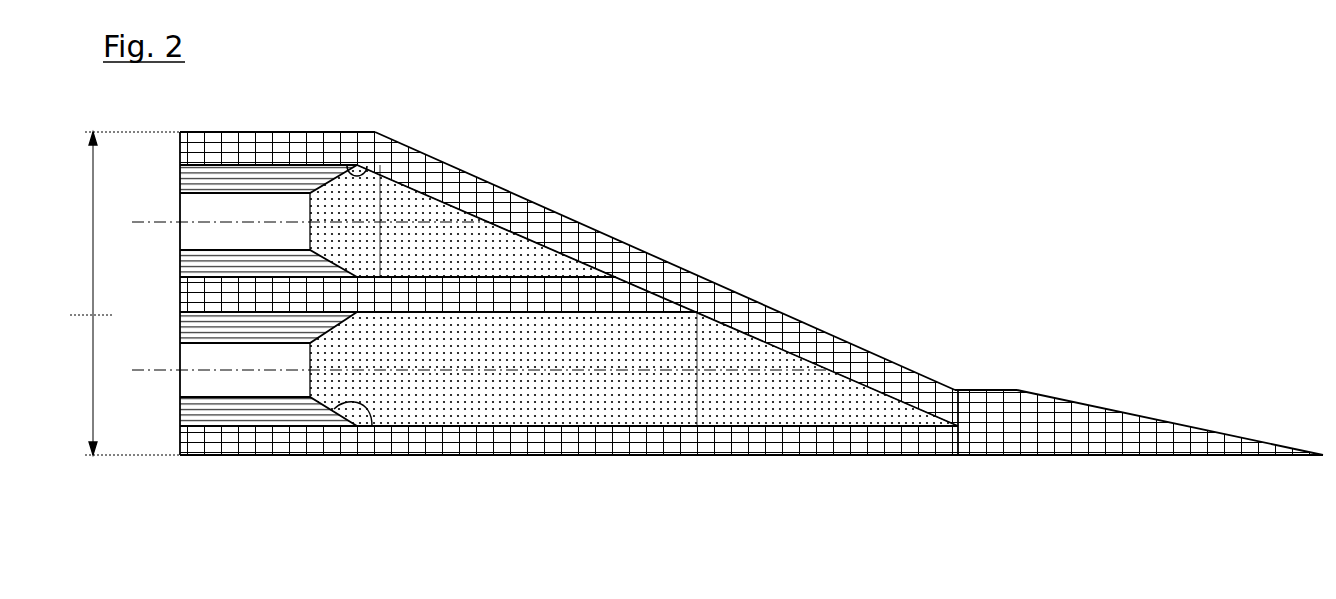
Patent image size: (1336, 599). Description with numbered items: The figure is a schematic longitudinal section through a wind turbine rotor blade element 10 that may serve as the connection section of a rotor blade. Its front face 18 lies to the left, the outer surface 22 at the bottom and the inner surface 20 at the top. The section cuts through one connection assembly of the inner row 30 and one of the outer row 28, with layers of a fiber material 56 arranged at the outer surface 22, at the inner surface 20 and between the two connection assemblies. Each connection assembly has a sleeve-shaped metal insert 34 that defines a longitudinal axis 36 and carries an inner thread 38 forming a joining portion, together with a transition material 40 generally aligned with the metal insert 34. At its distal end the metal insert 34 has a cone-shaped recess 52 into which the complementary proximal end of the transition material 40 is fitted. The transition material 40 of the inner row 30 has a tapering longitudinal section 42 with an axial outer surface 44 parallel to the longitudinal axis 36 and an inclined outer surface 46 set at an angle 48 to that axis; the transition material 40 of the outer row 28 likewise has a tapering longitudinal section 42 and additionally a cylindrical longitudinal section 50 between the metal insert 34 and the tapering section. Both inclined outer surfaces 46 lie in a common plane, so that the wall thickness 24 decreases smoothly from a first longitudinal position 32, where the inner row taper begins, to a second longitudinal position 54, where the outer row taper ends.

The wind turbine rotor blade element 10 is at (877, 120).
The front face 18 is at (178, 436).
The inner surface 20 is at (422, 150).
The outer surface 22 is at (455, 456).
The wall thickness 24 is at (125, 293).
The outer row 28 is at (156, 330).
The inner row 30 is at (156, 185).
The first longitudinal position 32 is at (375, 131).
The metal insert 34 is at (245, 183).
The longitudinal axis 36 is at (140, 223).
The inner thread 38 is at (193, 250).
The transition material 40 is at (388, 180).
The tapering longitudinal section 42 is at (512, 245).
The axial outer surface 44 is at (656, 297).
The inclined outer surface 46 is at (452, 173).
The angle 48 is at (465, 210).
The cylindrical longitudinal section 50 is at (488, 400).
The cone-shaped recess 52 is at (362, 162).
The second longitudinal position 54 is at (957, 389).
The fiber material 56 is at (1023, 440).